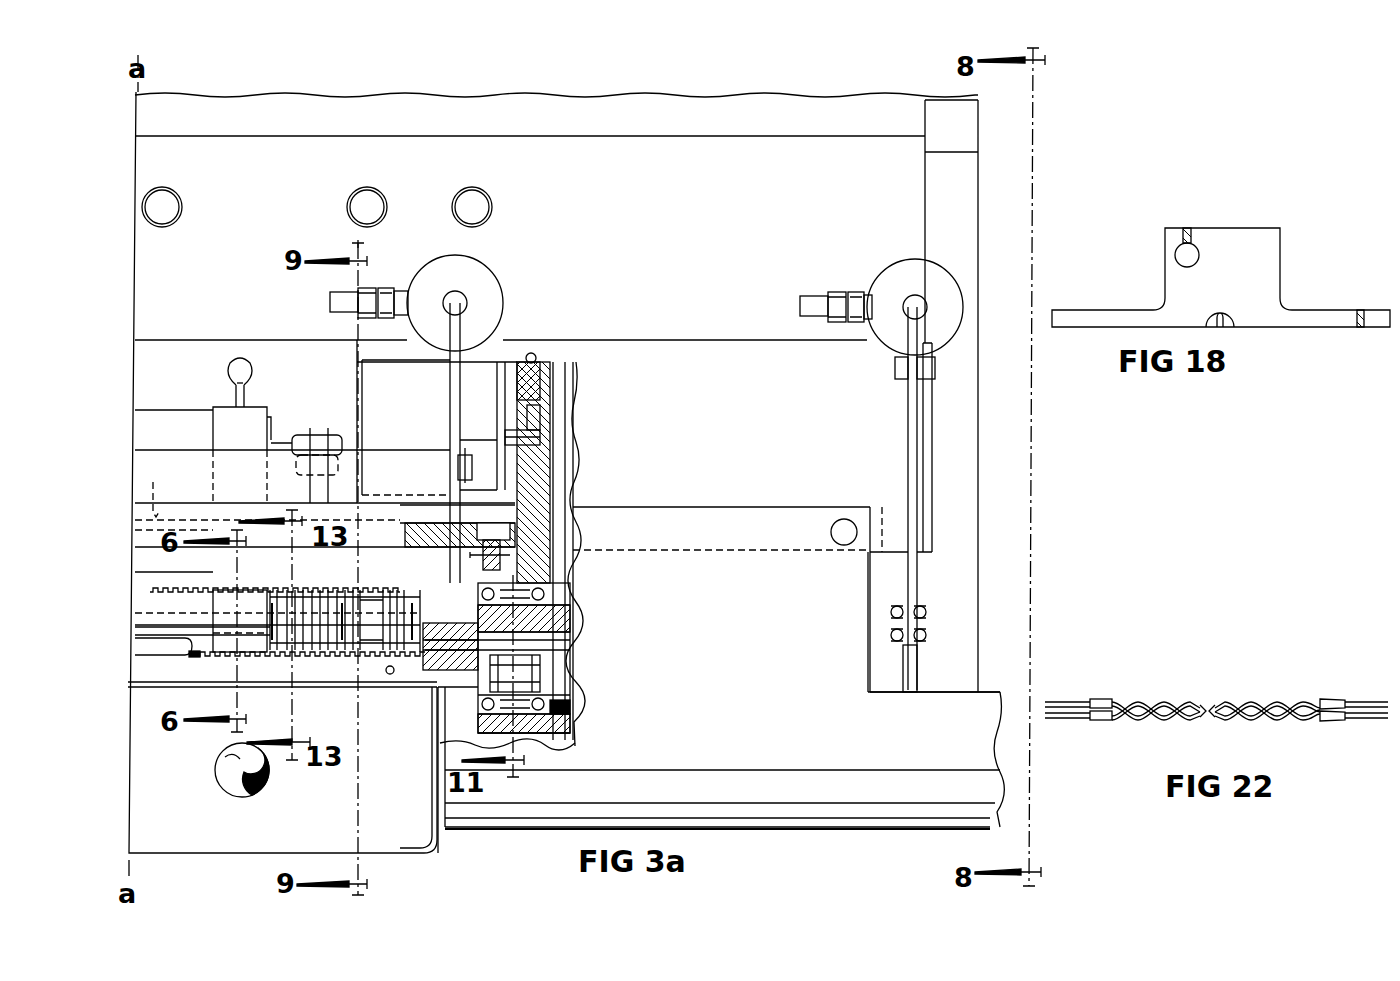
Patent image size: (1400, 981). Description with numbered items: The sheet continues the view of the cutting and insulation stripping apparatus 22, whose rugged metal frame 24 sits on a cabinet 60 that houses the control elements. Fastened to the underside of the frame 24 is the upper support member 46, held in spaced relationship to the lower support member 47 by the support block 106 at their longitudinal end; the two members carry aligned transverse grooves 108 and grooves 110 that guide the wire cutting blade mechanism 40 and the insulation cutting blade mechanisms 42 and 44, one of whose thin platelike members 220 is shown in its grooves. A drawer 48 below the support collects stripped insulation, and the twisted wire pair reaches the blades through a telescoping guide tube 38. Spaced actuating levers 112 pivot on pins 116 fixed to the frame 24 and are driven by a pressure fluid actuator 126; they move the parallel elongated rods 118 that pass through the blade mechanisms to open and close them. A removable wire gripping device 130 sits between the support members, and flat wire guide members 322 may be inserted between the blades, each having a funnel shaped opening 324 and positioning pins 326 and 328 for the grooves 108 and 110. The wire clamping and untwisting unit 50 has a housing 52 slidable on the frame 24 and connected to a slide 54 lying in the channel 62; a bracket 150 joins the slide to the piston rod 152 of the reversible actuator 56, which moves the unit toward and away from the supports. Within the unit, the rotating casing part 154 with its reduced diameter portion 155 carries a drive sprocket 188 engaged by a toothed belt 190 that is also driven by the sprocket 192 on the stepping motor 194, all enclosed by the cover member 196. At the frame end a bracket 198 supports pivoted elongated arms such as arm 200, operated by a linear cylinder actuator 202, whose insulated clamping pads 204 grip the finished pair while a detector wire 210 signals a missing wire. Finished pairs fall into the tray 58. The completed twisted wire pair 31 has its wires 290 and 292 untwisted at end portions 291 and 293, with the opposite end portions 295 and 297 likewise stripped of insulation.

In FIG. 3A, the cabinet 60 is at (681, 108).
In FIG. 3A, the pressure fluid actuator 126 is at (492, 276).
In FIG. 3A, the motor 194 is at (494, 365).
In FIG. 3A, the cover member 196 is at (564, 368).
In FIG. 3A, the drive sprocket 192 is at (562, 395).
In FIG. 3A, the actuating levers 112 is at (450, 400).
In FIG. 3A, the pins 116 is at (464, 463).
In FIG. 3A, the pressure fluid cylinder type actuator 56 is at (187, 408).
In FIG. 3A, the piston rod 152 is at (281, 435).
In FIG. 3A, the bracket 150 is at (305, 424).
In FIG. 3A, the channel 62 is at (153, 491).
In FIG. 3A, the slide 54 is at (440, 522).
In FIG. 3A, the housing 52 is at (545, 507).
In FIG. 3A, the frame 24 is at (136, 535).
In FIG. 3A, the upper support member 46 is at (132, 574).
In FIG. 3A, the transverse grooves 108 is at (190, 589).
In FIG. 3A, the elongated rods 118 is at (140, 622).
In FIG. 3A, the insulation cutting blade mechanism 42 is at (272, 603).
In FIG. 3A, the wire cutting blade mechanism 40 is at (342, 603).
In FIG. 3A, the insulation cutting blade mechanism 44 is at (412, 603).
In FIG. 3A, the wire clamping and untwisting unit 50 is at (580, 619).
In FIG. 3A, the rotating casing part 154 is at (570, 648).
In FIG. 3A, the lower support member 47 is at (144, 659).
In FIG. 3A, the telescoping guide tube 38 is at (141, 682).
In FIG. 3A, the platelike member 220 is at (277, 635).
In FIG. 3A, the wire guide member 322 is at (343, 642).
In FIG. 18, the wire guide member 322 is at (1282, 256).
In FIG. 3A, the support block 106 is at (417, 663).
In FIG. 3A, the reduced diameter portion 155 is at (437, 710).
In FIG. 3A, the drive sprocket 188 is at (570, 710).
In FIG. 3A, the toothed belt 190 is at (568, 742).
In FIG. 3A, the transverse grooves 110 is at (195, 660).
In FIG. 3A, the wire gripping device 130 is at (250, 646).
In FIG. 3A, the drawer 48 is at (240, 853).
In FIG. 3A, the cutting and insulation stripping apparatus 22 is at (384, 858).
In FIG. 3A, the tray 58 is at (788, 805).
In FIG. 3A, the linear cylinder actuator 202 is at (907, 277).
In FIG. 3A, the elongated arm 200 is at (908, 437).
In FIG. 3A, the bracket 198 is at (925, 455).
In FIG. 3A, the detector wire 210 is at (886, 680).
In FIG. 3A, the insulated clamping pads 204 is at (908, 693).
In FIG. 18, the funnel shaped opening 324 is at (1222, 330).
In FIG. 18, the pin 326 is at (1190, 227).
In FIG. 18, the pin 328 is at (1360, 330).
In FIG. 22, the twisted wire pair 31 is at (1243, 695).
In FIG. 22, the wire 290 is at (1118, 703).
In FIG. 22, the end portion 291 is at (1073, 701).
In FIG. 22, the wire 292 is at (1115, 720).
In FIG. 22, the end portion 293 is at (1061, 718).
In FIG. 22, the end portion 295 is at (1364, 680).
In FIG. 22, the end portion 297 is at (1362, 720).